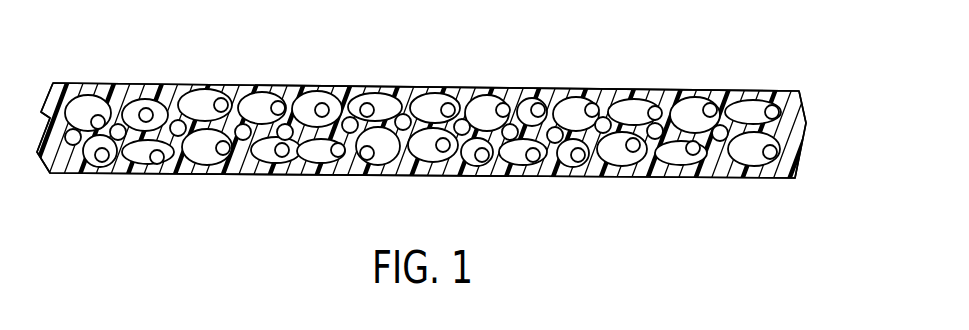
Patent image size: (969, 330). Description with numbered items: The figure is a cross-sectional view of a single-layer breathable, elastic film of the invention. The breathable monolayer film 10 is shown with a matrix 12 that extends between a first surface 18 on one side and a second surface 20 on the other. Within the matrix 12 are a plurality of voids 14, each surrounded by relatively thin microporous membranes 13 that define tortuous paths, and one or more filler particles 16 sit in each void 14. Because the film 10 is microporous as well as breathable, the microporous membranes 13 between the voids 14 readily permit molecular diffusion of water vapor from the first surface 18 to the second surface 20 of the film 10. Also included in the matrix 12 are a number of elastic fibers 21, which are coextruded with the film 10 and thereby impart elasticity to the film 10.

The breathable monolayer film 10 is at (795, 162).
The matrix 12 is at (745, 100).
The microporous membranes 13 is at (430, 122).
The voids 14 is at (511, 154).
The filler particles 16 is at (535, 155).
The first surface 18 is at (93, 90).
The second surface 20 is at (112, 173).
The elastic fibers 21 is at (513, 128).